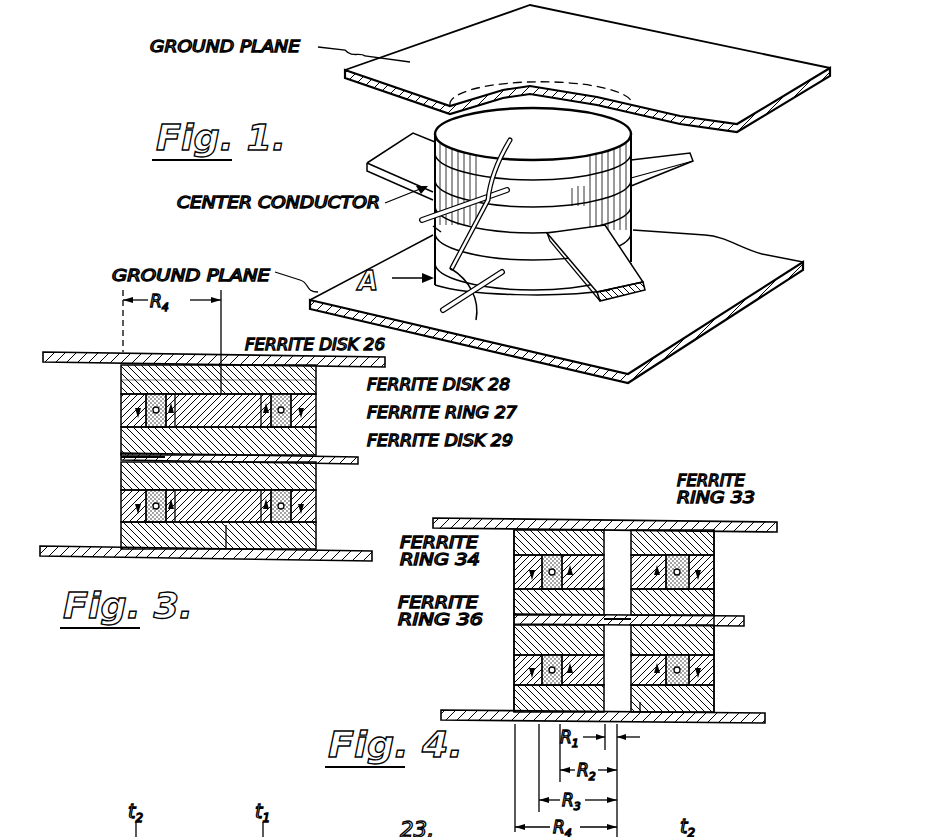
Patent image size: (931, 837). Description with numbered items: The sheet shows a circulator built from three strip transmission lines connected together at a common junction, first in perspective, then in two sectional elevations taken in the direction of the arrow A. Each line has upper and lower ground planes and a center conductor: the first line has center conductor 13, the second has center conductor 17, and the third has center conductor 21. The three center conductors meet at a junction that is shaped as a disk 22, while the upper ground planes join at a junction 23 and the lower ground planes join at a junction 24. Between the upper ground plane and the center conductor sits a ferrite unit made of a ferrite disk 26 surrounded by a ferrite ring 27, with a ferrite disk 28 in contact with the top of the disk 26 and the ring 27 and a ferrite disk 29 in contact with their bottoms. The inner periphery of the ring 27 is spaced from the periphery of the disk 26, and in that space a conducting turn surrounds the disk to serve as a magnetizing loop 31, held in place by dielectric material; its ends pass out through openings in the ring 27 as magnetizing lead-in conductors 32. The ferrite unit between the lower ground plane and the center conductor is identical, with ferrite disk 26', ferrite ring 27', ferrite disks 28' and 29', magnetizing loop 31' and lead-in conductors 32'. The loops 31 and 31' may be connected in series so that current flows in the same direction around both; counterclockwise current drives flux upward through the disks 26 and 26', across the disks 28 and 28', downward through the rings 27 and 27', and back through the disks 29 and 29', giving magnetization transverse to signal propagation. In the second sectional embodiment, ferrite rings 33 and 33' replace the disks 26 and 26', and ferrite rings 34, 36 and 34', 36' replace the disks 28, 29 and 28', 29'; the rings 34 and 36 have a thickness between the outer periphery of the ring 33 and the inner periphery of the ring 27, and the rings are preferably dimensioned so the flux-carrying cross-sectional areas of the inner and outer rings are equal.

In FIG. 1, the center conductor 13 is at (668, 152).
In FIG. 1, the center conductor 17 is at (400, 150).
In FIG. 1, the center conductor 21 is at (620, 275).
In FIG. 3, the center conductor 21 is at (362, 458).
In FIG. 4, the center conductor 21 is at (746, 618).
In FIG. 1, the disk 22 is at (426, 231).
In FIG. 3, the disk 22 is at (160, 456).
In FIG. 4, the disk 22 is at (698, 612).
In FIG. 1, the junction of the upper ground planes 23 is at (668, 45).
In FIG. 3, the junction of the upper ground planes 23 is at (218, 360).
In FIG. 4, the junction of the upper ground planes 23 is at (618, 522).
In FIG. 1, the junction of the lower ground planes 24 is at (682, 324).
In FIG. 3, the junction of the lower ground planes 24 is at (160, 551).
In FIG. 4, the junction of the lower ground planes 24 is at (742, 723).
In FIG. 3, the ferrite disk 26 is at (218, 369).
In FIG. 3, the ferrite disk 26' is at (235, 567).
In FIG. 1, the ferrite ring 27 is at (563, 196).
In FIG. 3, the ferrite ring 27 is at (243, 410).
In FIG. 4, the ferrite ring 27 is at (649, 569).
In FIG. 1, the ferrite ring 27' is at (533, 307).
In FIG. 3, the ferrite ring 27' is at (260, 506).
In FIG. 4, the ferrite ring 27' is at (651, 670).
In FIG. 1, the ferrite disk 28 is at (533, 196).
In FIG. 3, the ferrite disk 28 is at (243, 383).
In FIG. 1, the ferrite disk 28' is at (552, 316).
In FIG. 3, the ferrite disk 28' is at (250, 537).
In FIG. 1, the ferrite disk 29 is at (573, 219).
In FIG. 3, the ferrite disk 29 is at (243, 441).
In FIG. 1, the ferrite disk 29' is at (572, 247).
In FIG. 3, the ferrite disk 29' is at (250, 482).
In FIG. 3, the magnetizing loop 31 is at (173, 393).
In FIG. 4, the magnetizing loop 31 is at (592, 526).
In FIG. 3, the magnetizing loop 31' is at (199, 554).
In FIG. 4, the magnetizing loop 31' is at (580, 710).
In FIG. 1, the magnetizing lead-in conductors 32 is at (470, 222).
In FIG. 1, the magnetizing lead-in conductors 32' is at (490, 308).
In FIG. 4, the ferrite ring 33 is at (614, 602).
In FIG. 4, the ferrite ring 33' is at (649, 745).
In FIG. 4, the ferrite ring 34 is at (596, 542).
In FIG. 4, the ferrite ring 34' is at (580, 698).
In FIG. 4, the ferrite ring 36 is at (601, 602).
In FIG. 4, the ferrite ring 36' is at (580, 640).